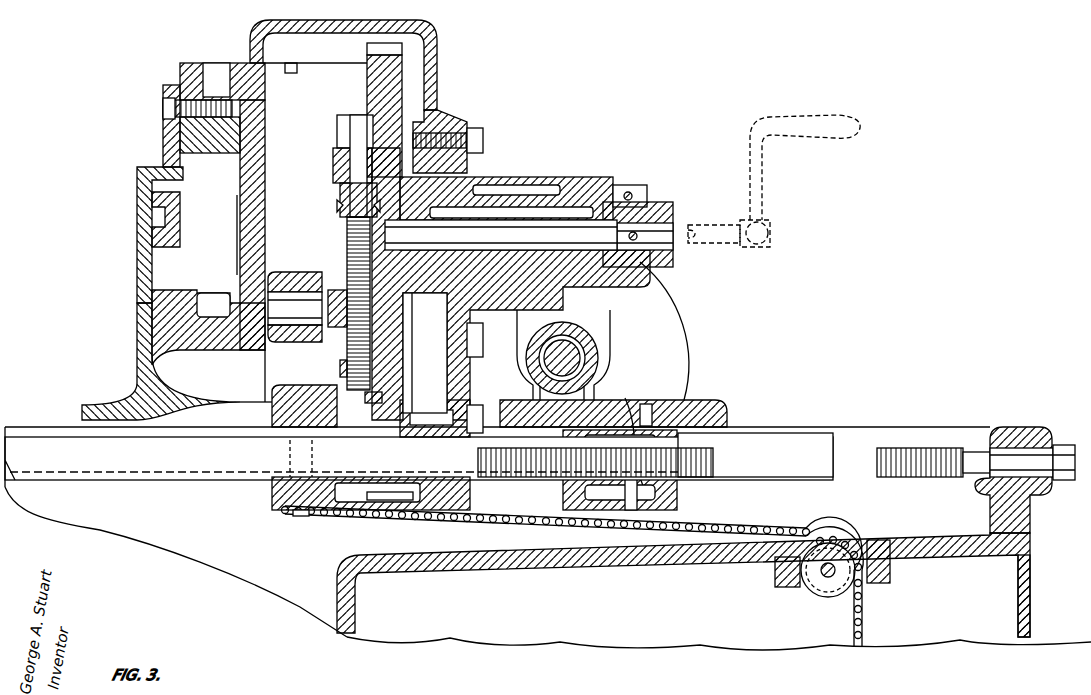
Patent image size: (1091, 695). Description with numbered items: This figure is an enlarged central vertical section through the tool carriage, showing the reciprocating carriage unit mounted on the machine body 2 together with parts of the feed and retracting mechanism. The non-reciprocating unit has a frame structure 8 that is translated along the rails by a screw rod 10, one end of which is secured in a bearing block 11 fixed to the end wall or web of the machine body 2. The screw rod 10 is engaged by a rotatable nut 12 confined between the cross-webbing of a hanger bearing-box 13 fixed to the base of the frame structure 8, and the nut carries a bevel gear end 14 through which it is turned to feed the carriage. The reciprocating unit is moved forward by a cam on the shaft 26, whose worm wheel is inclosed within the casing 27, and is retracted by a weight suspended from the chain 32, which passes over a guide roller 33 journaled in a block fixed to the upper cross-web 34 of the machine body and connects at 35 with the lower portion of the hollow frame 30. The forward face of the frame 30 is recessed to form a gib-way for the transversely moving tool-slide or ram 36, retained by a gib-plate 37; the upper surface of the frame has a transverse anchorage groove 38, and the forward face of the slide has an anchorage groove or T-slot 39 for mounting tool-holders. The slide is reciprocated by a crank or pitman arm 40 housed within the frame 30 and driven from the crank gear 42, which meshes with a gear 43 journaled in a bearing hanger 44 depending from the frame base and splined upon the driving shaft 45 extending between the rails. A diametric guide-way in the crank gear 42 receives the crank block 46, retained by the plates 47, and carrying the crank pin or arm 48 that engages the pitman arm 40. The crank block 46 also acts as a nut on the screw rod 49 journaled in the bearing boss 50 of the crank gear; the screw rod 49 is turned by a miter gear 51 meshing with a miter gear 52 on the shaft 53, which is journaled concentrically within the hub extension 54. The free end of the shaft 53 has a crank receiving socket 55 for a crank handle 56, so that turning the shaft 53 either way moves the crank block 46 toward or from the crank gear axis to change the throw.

The machine body 2 is at (1018, 582).
The frame structure 8 is at (645, 404).
The screw rod 10 is at (714, 457).
The bearing block 11 is at (1046, 432).
The rotatable nut 12 is at (600, 503).
The hanger bearing-box 13 is at (678, 498).
The bevel gear end 14 is at (624, 398).
The shaft 26 is at (578, 355).
The casing 27 is at (686, 332).
The frame 30 is at (437, 104).
The chain 32 is at (490, 518).
The guide roller 33 is at (815, 590).
The upper cross-web 34 is at (926, 538).
The chain connection 35 is at (300, 517).
The tool-slide or ram 36 is at (137, 275).
The gib-plate 37 is at (163, 136).
The transverse anchorage groove 38 is at (211, 63).
The anchorage groove or T-slot 39 is at (150, 217).
The crank or pitman arm 40 is at (290, 340).
The crank gear 42 is at (366, 57).
The gear 43 is at (388, 500).
The bearing hanger 44 is at (275, 508).
The driving shaft 45 is at (182, 460).
The crank block 46 is at (336, 292).
The plates 47 is at (347, 227).
The crank pin or arm 48 is at (285, 290).
The screw rod or shaft 49 is at (345, 370).
The bearing boss 50 is at (337, 160).
The miter gear 51 is at (340, 206).
The miter gear 52 is at (408, 298).
The shaft 53 is at (501, 235).
The hub extension 54 is at (520, 190).
The crank receiving socket 55 is at (668, 228).
The crank handle 56 is at (768, 213).